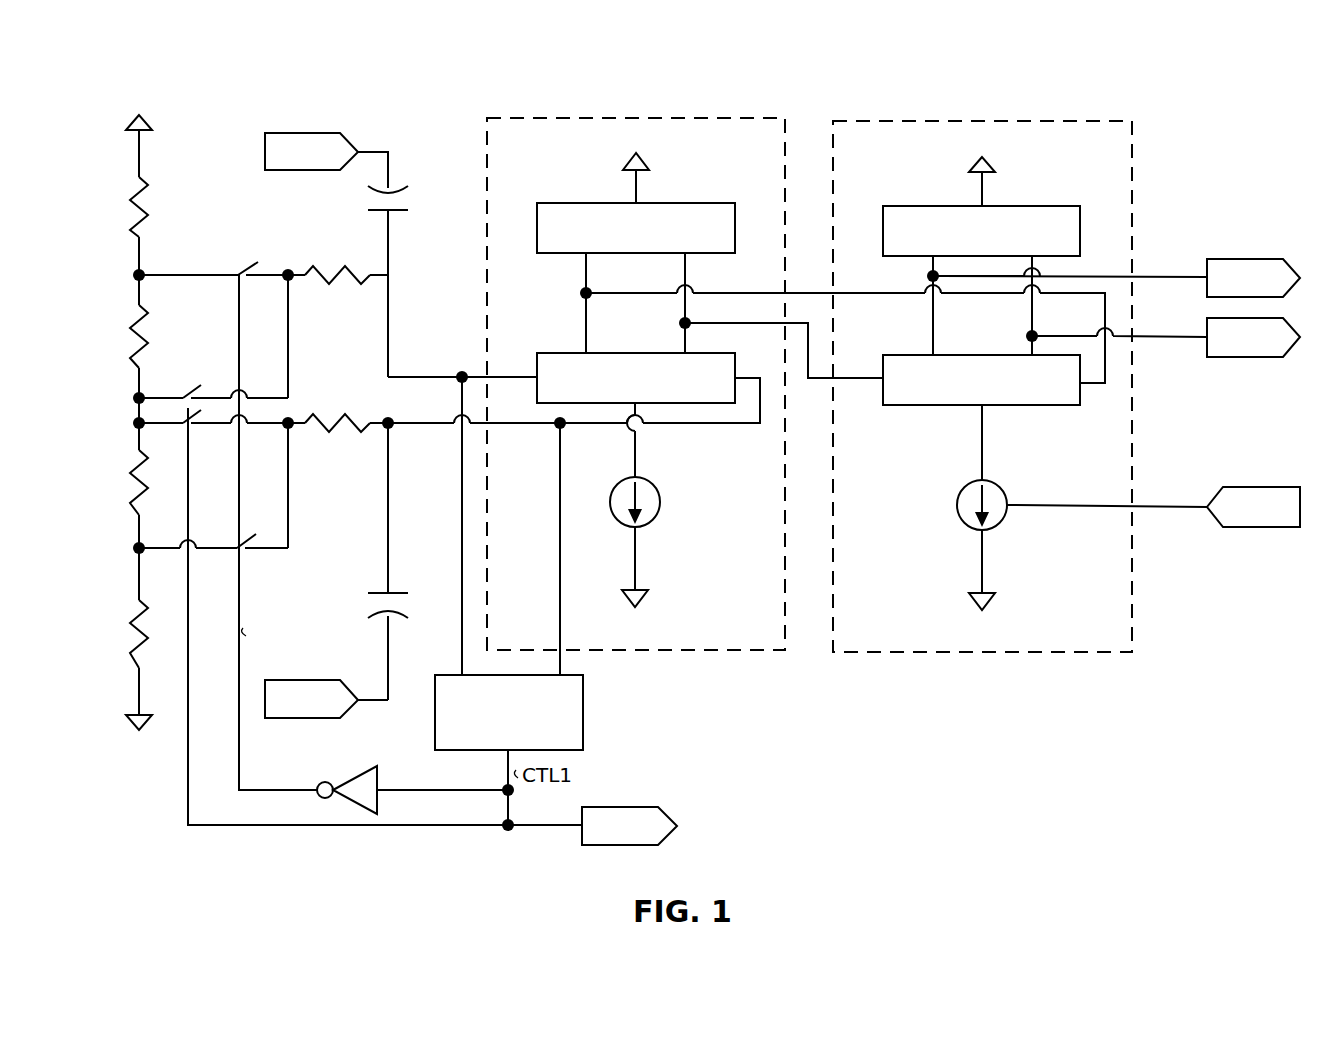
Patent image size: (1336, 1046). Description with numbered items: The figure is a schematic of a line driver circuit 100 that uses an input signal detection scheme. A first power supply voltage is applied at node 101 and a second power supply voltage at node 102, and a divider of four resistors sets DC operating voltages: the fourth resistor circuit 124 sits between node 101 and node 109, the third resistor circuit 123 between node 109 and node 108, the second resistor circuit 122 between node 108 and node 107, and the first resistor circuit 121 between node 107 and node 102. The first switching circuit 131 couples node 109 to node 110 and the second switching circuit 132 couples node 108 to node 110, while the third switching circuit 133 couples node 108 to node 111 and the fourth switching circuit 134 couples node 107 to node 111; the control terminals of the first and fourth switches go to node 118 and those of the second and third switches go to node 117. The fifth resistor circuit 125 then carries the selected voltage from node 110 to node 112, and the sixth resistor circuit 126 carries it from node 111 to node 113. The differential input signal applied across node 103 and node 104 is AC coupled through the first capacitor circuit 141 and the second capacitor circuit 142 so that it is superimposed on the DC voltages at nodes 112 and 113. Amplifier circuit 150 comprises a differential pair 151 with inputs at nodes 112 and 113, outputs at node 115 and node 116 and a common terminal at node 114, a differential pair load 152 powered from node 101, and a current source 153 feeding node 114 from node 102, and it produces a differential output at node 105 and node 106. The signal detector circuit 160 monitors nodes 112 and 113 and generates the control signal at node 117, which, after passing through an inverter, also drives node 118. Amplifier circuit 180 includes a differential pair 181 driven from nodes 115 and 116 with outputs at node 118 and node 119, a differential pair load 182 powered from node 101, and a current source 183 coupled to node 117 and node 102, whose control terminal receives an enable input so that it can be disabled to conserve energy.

The line driver circuit 100 is at (1268, 105).
The node 101 is at (128, 128).
The node 102 is at (130, 713).
The node 103 is at (314, 133).
The node 104 is at (312, 722).
The node 105 is at (1256, 258).
The node 106 is at (1260, 357).
The node 107 is at (131, 544).
The node 108 is at (131, 394).
The node 109 is at (131, 272).
The node 110 is at (290, 270).
The node 111 is at (290, 474).
The node 112 is at (444, 372).
The node 113 is at (444, 421).
The node 114 is at (638, 470).
The node 115 is at (738, 298).
The node 116 is at (738, 328).
The node 117 is at (186, 776).
The node 118 is at (240, 784).
The node 119 is at (1170, 334).
The resistor circuit R1 121 is at (130, 630).
The resistor circuit R2 122 is at (130, 476).
The resistor circuit R3 123 is at (130, 326).
The resistor circuit R4 124 is at (130, 198).
The resistor circuit R5 125 is at (350, 270).
The resistor circuit R6 126 is at (350, 416).
The switching circuit S1 131 is at (244, 266).
The switching circuit S2 132 is at (194, 392).
The switching circuit S3 133 is at (194, 428).
The switching circuit S4 134 is at (250, 526).
The capacitor circuit C1 141 is at (410, 216).
The capacitor circuit C2 142 is at (410, 598).
The amplifier circuit 150 is at (786, 120).
The differential pair 151 is at (378, 766).
The differential pair load 152 is at (538, 204).
The current source 153 is at (618, 480).
The signal detector circuit 160 is at (588, 716).
The amplifier circuit 180 is at (1136, 120).
The differential pair 181 is at (884, 356).
The differential pair load 182 is at (884, 206).
The current source 183 is at (966, 482).